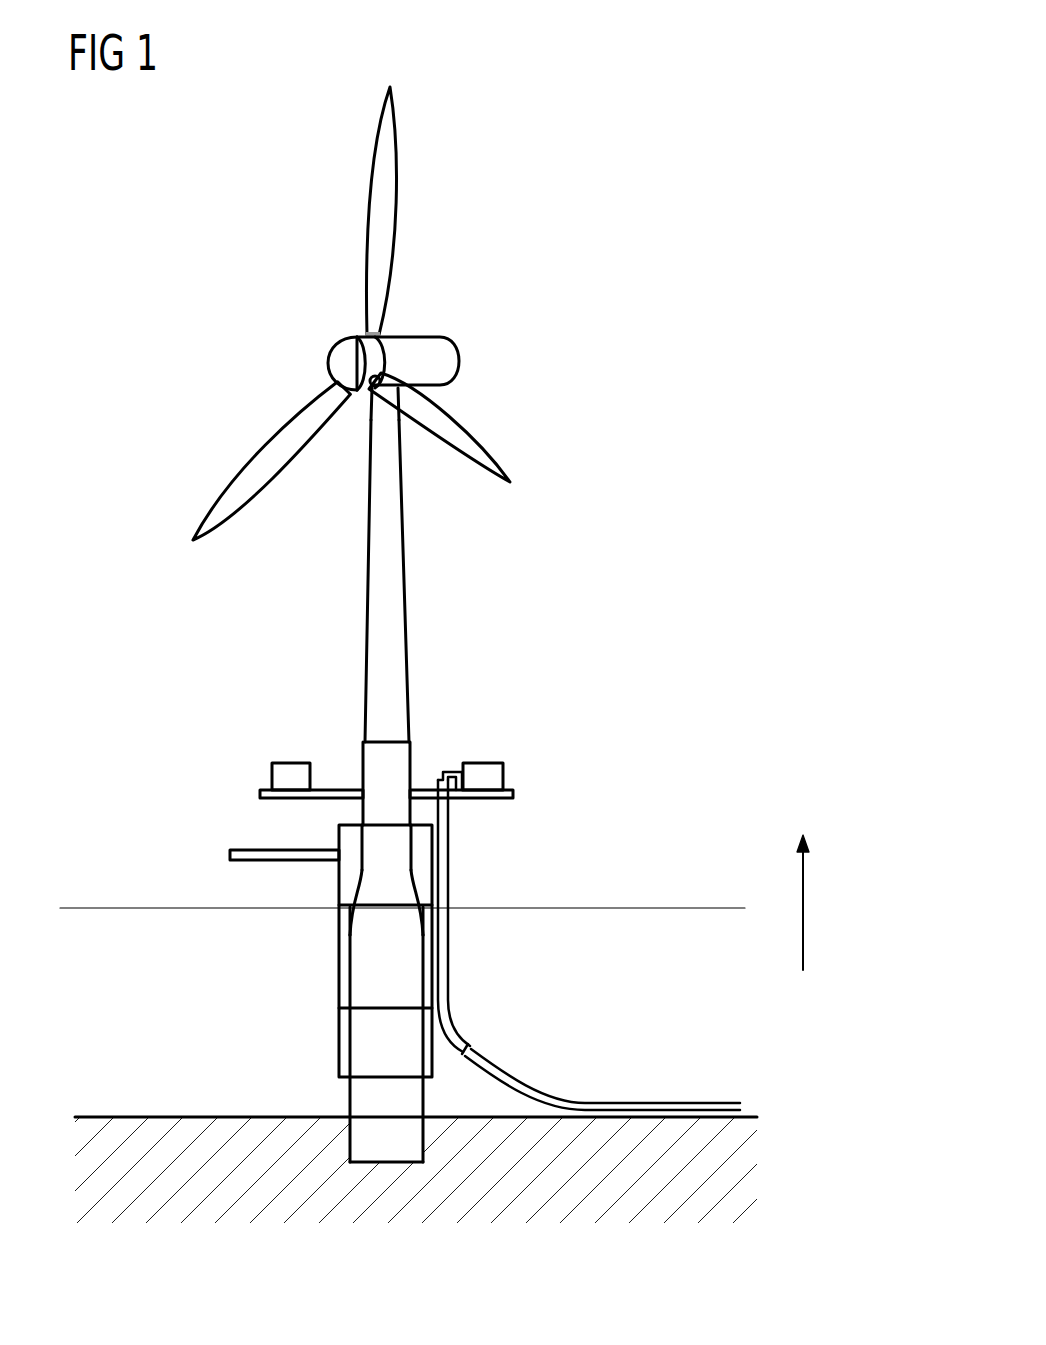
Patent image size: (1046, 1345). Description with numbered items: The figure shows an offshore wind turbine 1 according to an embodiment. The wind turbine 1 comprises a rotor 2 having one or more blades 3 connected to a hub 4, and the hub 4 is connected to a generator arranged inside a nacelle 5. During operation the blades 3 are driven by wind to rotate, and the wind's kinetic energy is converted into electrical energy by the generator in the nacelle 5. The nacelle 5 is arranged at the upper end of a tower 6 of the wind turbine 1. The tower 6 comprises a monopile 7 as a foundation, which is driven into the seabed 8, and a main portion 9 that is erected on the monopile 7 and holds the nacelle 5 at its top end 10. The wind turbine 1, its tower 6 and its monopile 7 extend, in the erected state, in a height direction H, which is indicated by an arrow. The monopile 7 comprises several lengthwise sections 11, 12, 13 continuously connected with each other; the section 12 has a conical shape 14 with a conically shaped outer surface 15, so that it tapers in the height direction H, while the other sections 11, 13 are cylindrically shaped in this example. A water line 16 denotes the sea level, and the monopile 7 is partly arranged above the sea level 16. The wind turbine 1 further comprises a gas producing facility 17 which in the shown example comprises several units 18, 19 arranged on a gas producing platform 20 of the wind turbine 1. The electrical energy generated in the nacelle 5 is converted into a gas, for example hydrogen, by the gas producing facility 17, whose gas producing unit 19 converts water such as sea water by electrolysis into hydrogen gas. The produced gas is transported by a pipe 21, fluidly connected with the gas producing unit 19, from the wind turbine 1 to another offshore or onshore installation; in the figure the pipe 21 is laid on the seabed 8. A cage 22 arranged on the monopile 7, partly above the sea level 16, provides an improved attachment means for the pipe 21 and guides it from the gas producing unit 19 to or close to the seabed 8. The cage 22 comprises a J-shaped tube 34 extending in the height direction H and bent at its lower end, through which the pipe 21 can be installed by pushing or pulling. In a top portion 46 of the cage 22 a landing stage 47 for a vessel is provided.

The offshore wind turbine 1 is at (540, 238).
The rotor 2 is at (262, 297).
The blades 3 is at (380, 245).
The hub 4 is at (343, 362).
The nacelle 5 is at (462, 365).
The tower 6 is at (500, 557).
The monopile 7 is at (410, 755).
The seabed 8 is at (158, 1117).
The main portion 9 is at (390, 600).
The top end 10 is at (365, 410).
The lengthwise section 11 is at (340, 966).
The lengthwise section 12 is at (361, 883).
The lengthwise section 13 is at (361, 841).
The conical shape 14 is at (386, 902).
The conically shaped outer surface 15 is at (352, 918).
The water line 16 is at (662, 908).
The gas producing facility 17 is at (403, 730).
The unit 18 is at (290, 763).
The gas producing unit 19 is at (495, 760).
The gas producing platform 20 is at (260, 793).
The pipe 21 is at (455, 762).
The cage 22 is at (340, 1035).
The tube 34 is at (457, 1017).
The top portion 46 is at (340, 847).
The landing stage 47 is at (230, 856).
The height direction H is at (805, 906).